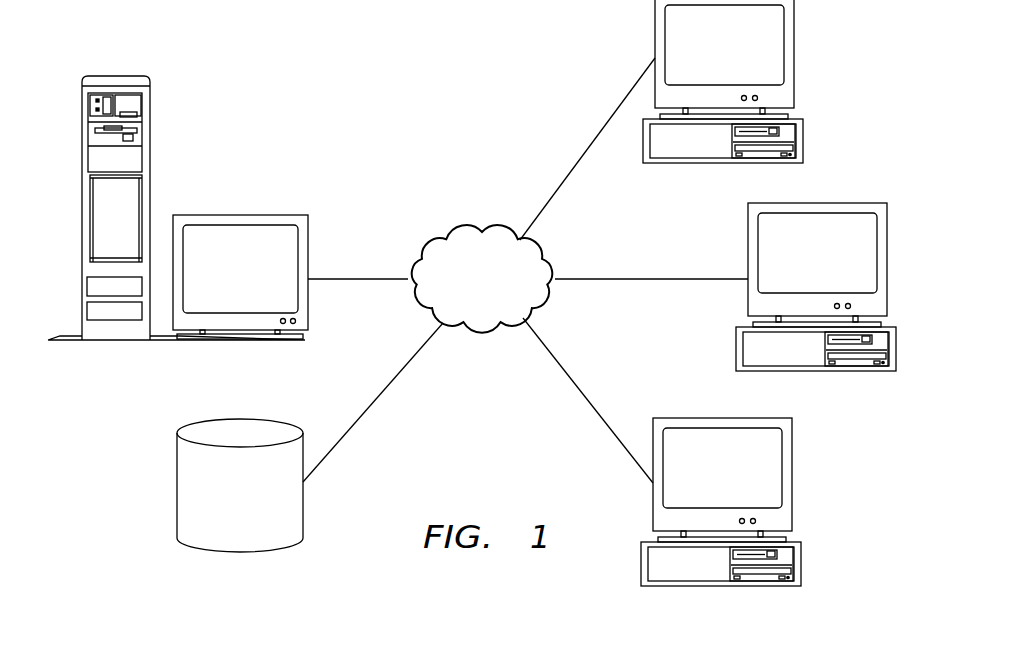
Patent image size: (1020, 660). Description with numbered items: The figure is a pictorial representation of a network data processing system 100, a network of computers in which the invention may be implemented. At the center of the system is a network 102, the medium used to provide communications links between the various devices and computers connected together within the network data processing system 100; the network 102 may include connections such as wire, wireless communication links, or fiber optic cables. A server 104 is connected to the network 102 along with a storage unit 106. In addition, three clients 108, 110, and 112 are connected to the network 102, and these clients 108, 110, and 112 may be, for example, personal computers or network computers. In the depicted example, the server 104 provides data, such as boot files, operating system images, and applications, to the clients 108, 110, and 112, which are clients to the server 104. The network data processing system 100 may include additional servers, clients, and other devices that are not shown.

The network data processing system 100 is at (356, 80).
The network 102 is at (462, 307).
The server 104 is at (221, 280).
The storage unit 106 is at (220, 525).
The client 108 is at (707, 58).
The client 110 is at (802, 270).
The client 112 is at (705, 485).